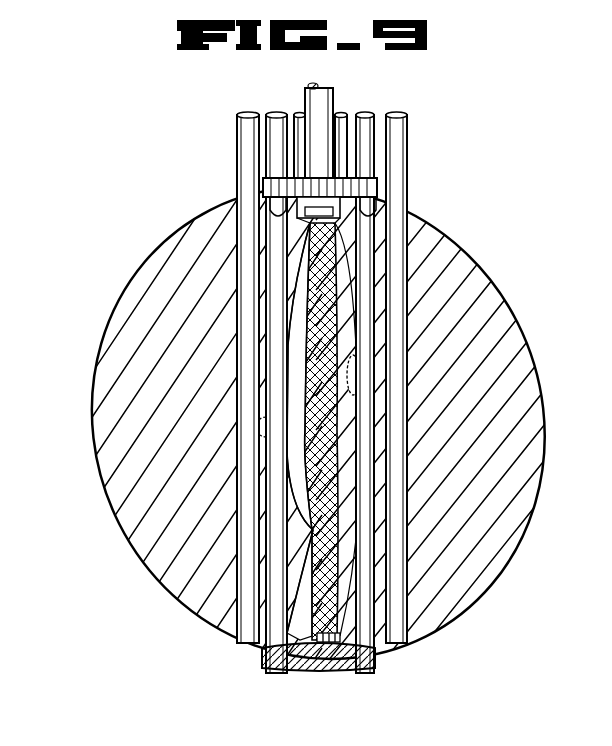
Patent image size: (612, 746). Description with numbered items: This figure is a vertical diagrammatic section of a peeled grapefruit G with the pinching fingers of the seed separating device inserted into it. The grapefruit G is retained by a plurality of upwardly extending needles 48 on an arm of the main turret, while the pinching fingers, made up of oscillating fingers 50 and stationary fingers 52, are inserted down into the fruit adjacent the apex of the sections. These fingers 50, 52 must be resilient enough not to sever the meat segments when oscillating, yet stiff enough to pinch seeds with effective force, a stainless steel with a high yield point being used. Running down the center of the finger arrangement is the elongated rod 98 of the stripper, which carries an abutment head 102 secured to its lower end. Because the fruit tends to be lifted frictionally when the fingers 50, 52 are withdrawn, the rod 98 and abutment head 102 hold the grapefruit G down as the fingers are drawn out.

The grapefruit G is at (93, 401).
The upwardly extending needles 48 is at (272, 404).
The oscillating fingers 50 is at (264, 115).
The stationary fingers 52 is at (298, 113).
The elongated rod 98 is at (324, 92).
The abutment head 102 is at (372, 188).